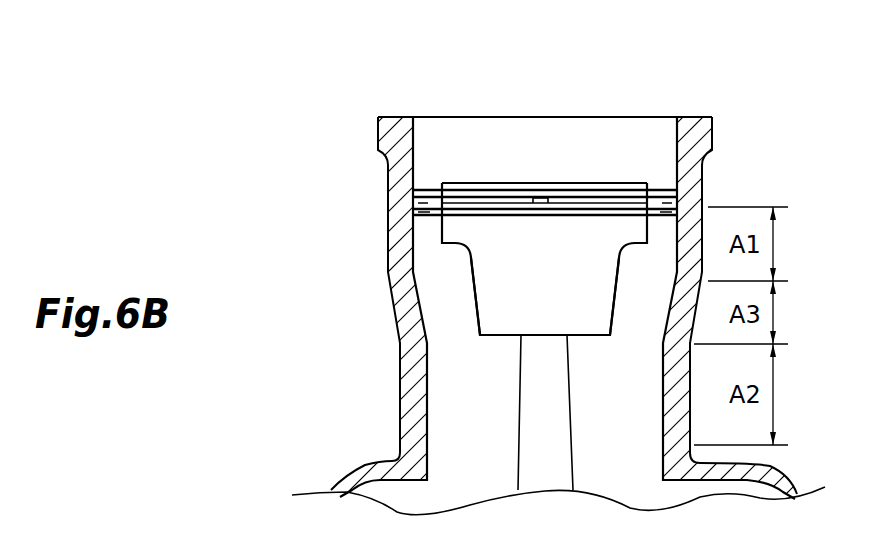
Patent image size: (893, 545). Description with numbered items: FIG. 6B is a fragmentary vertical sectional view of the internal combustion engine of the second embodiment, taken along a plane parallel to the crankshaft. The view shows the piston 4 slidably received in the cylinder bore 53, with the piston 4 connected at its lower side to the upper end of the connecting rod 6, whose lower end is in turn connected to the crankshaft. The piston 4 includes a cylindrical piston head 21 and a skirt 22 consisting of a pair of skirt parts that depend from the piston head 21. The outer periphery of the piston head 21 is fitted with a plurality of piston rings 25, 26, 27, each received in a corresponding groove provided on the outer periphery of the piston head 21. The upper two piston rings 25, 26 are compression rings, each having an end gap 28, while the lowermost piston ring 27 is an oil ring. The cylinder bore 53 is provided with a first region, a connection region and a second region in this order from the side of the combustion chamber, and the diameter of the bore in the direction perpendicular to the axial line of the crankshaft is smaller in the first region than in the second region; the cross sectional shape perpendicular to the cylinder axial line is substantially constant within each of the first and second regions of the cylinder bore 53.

The piston 4 is at (597, 181).
The connecting rod 6 is at (533, 413).
The piston head 21 is at (476, 183).
The skirt 22 is at (497, 289).
The piston ring 25 is at (433, 191).
The piston ring 26 is at (432, 210).
The piston ring 27 is at (432, 215).
The end gap 28 is at (548, 183).
The cylinder bore 53 is at (677, 137).